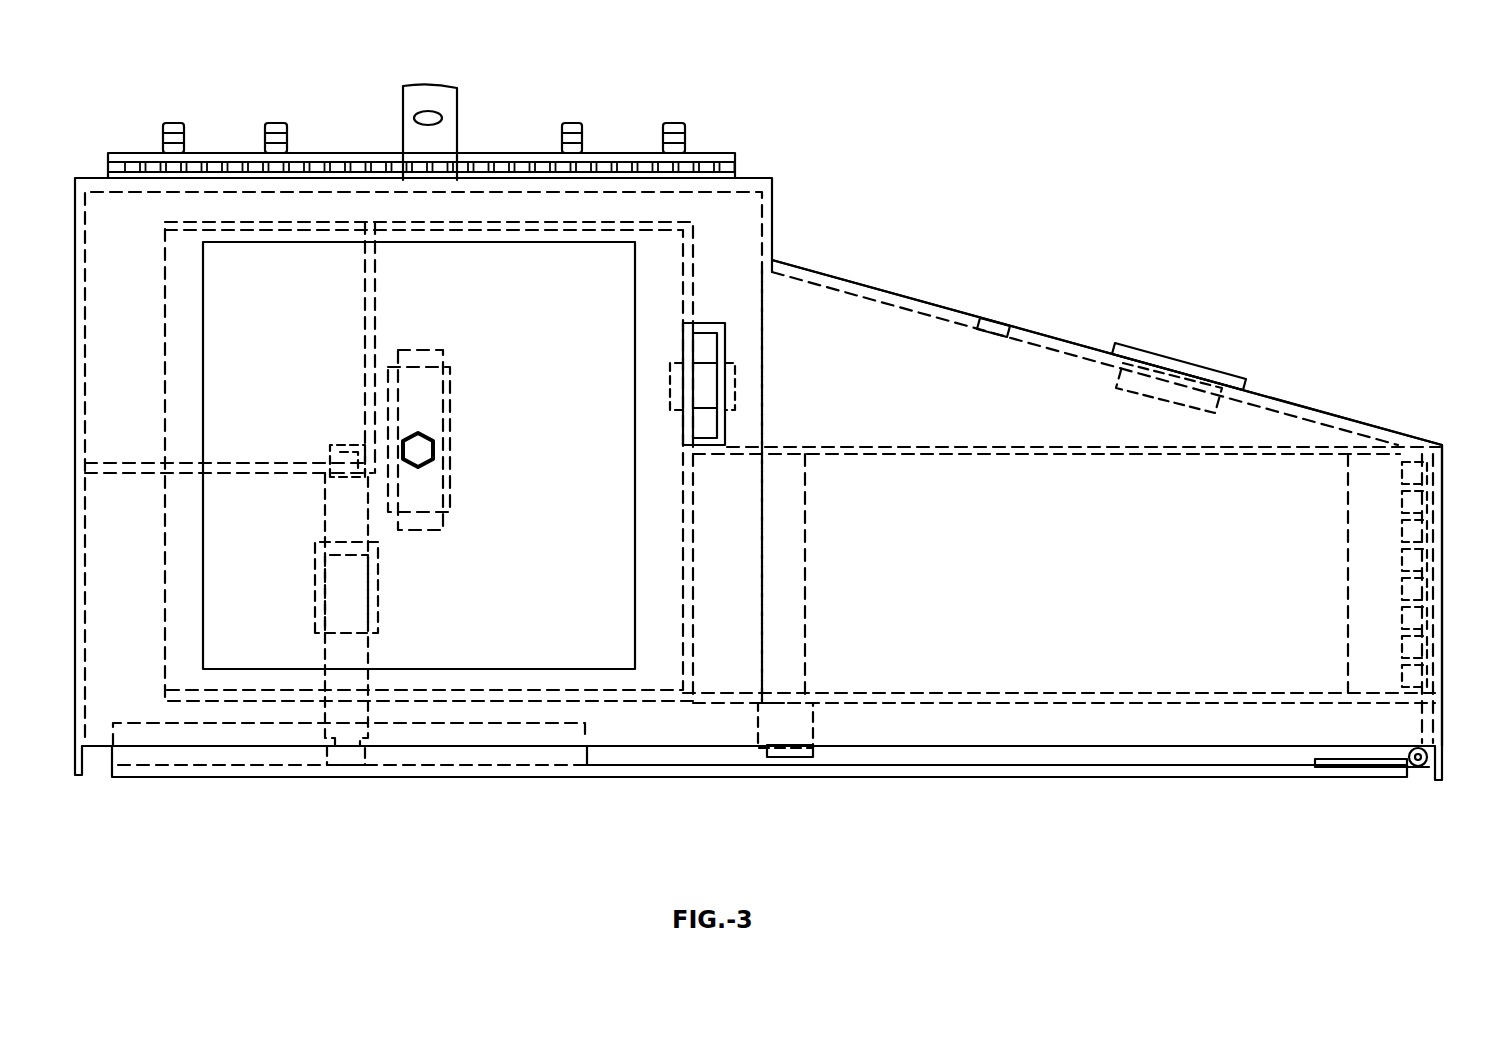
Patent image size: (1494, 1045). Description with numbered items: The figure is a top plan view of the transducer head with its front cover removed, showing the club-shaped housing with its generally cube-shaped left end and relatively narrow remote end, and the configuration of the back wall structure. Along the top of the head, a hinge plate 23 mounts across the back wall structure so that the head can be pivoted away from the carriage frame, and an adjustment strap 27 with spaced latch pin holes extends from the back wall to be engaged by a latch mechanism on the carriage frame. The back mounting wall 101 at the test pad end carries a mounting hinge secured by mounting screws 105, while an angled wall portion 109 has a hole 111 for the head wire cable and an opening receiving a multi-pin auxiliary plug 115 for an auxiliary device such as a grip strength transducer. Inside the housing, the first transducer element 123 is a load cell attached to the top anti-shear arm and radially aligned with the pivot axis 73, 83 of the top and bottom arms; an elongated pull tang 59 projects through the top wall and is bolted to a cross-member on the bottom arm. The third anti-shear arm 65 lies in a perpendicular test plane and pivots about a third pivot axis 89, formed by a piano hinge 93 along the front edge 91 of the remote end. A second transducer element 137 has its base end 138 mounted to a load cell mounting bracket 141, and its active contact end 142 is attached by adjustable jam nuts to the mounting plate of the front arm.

The hinge plate 23 is at (718, 158).
The adjustment strap 27 is at (440, 135).
The pull tang 59 is at (700, 350).
The third anti-shear arm 65 is at (707, 776).
The pivot axis 73 is at (1448, 440).
The pivot axis 83 is at (1442, 524).
The third pivot axis 89 is at (1428, 760).
The front edge 91 is at (1418, 768).
The piano hinge 93 is at (1345, 768).
The back mounting wall 101 is at (770, 180).
The mounting screws 105 is at (673, 150).
The angled wall portion 109 is at (880, 298).
The hole 111 is at (1005, 328).
The multi-pin auxiliary plug 115 is at (1145, 358).
The first transducer element 123 is at (432, 408).
The second transducer element 137 is at (387, 588).
The base end 138 is at (345, 500).
The load cell mounting bracket 141 is at (365, 300).
The active contact end 142 is at (350, 718).